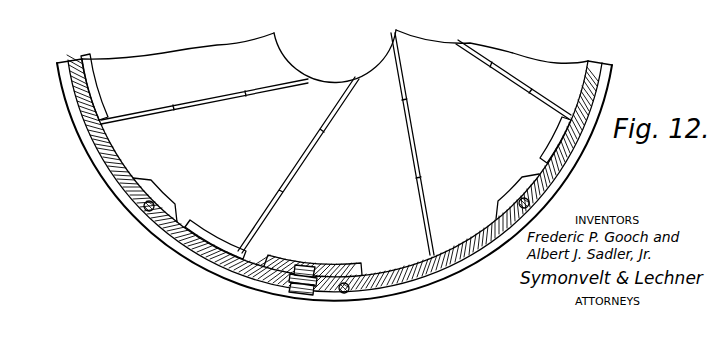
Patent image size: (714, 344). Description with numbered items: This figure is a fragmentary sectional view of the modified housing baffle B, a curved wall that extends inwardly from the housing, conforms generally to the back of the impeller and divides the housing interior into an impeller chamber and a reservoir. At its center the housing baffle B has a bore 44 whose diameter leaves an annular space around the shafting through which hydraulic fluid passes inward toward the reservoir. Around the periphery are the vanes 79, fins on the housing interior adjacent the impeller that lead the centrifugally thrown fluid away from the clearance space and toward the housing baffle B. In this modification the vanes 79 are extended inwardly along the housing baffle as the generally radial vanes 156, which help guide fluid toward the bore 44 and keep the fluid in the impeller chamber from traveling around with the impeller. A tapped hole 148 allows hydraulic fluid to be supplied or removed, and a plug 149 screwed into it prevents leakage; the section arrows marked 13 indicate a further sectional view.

The bore 44 is at (287, 56).
The generally radial vanes 156 is at (315, 137).
The vanes 79 is at (94, 83).
The section line 13- 13 is at (478, 160).
The tapped hole 148 is at (308, 276).
The plug 149 is at (292, 296).
The housing baffle B is at (128, 159).